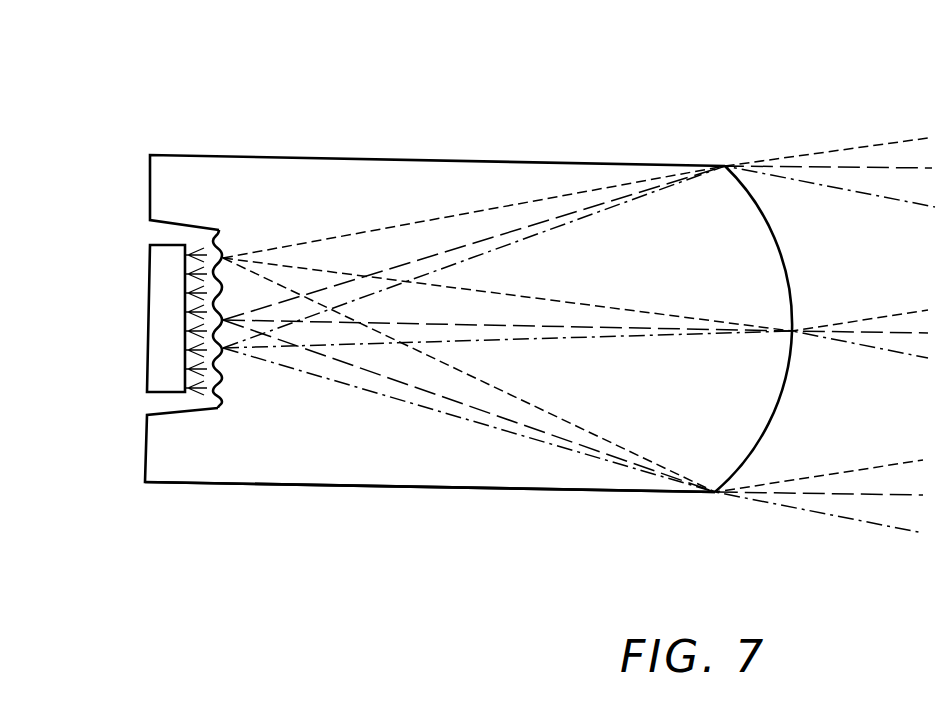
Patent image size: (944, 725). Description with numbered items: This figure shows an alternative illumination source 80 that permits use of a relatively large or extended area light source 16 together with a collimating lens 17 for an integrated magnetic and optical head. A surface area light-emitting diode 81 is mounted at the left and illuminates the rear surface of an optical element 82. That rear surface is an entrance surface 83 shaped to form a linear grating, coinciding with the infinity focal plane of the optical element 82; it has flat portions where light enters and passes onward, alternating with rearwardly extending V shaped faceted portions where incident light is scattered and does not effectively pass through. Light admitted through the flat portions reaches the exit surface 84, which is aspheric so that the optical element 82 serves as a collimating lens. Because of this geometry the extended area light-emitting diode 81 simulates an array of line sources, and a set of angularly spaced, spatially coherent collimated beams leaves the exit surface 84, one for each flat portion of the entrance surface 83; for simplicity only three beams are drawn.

The illumination system 80 is at (463, 36).
The collimating lens 17 is at (393, 124).
The light source 16 is at (121, 422).
The surface area light-emitting diode 81 is at (165, 380).
The optical element 82 is at (465, 490).
The entrance surface 83 is at (212, 258).
The exit surface 84 is at (791, 272).